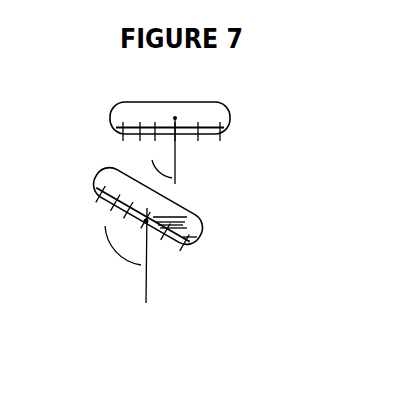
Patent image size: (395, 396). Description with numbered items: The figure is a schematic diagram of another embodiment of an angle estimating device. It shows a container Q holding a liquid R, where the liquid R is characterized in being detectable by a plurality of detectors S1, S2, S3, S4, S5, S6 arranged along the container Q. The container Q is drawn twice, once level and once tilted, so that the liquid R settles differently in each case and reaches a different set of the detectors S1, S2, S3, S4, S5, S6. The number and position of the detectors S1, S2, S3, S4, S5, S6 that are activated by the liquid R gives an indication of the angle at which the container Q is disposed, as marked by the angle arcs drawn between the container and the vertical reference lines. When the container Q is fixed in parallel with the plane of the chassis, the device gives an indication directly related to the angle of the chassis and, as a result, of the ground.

The container Q is at (229, 108).
The liquid R is at (229, 124).
The detector S1 is at (103, 171).
The detector S2 is at (121, 175).
The detector S3 is at (136, 179).
The detector S4 is at (156, 184).
The detector S5 is at (177, 190).
The detector S6 is at (197, 195).